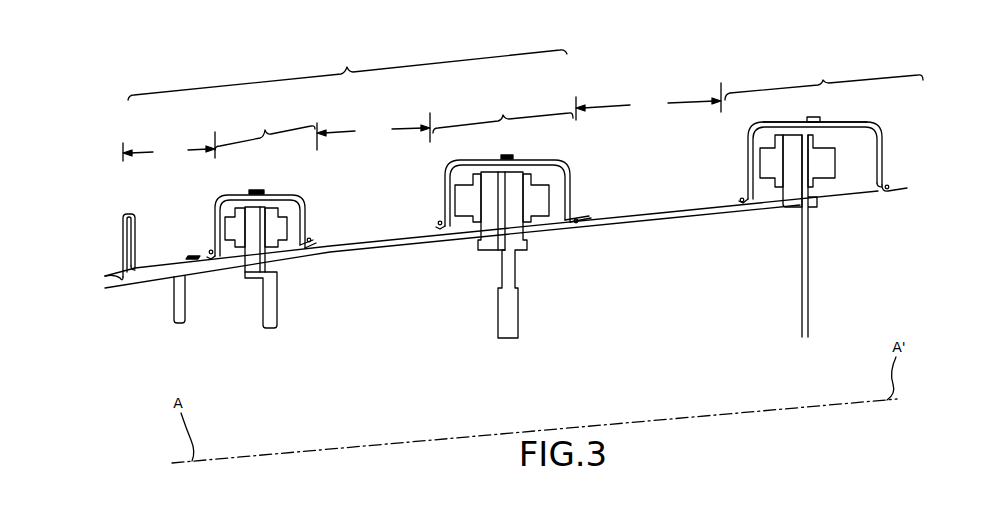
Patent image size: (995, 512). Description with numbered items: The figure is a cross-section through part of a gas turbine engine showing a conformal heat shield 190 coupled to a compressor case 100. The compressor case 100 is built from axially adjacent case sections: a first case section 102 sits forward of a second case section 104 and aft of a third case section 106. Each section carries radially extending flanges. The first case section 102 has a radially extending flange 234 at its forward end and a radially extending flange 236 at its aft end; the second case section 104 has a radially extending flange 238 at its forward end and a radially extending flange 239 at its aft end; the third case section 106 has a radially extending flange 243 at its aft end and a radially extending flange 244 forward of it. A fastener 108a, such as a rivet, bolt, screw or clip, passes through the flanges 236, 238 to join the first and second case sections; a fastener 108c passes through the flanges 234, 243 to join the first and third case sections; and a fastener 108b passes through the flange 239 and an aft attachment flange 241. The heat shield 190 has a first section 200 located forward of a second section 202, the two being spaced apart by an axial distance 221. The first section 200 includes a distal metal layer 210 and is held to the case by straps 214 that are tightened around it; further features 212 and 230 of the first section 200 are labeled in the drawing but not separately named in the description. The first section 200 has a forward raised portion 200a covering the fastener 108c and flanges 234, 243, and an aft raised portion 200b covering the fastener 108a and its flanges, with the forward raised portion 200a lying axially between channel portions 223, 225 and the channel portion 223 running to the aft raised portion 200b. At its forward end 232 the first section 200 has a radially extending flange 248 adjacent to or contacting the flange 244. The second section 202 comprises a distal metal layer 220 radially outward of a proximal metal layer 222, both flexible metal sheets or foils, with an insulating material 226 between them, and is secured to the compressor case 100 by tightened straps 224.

The compressor case 100 is at (120, 336).
The first case section 102 is at (352, 253).
The second case section 104 is at (617, 222).
The third case section 106 is at (180, 290).
The fastener 108a is at (464, 195).
The fastener 108b is at (830, 167).
The fastener 108c is at (230, 222).
The conformal heat shield 190 is at (122, 136).
The first section 200 is at (347, 72).
The forward raised portion 200a is at (265, 132).
The aft raised portion 200b is at (503, 113).
The second section 202 is at (824, 79).
The distal metal layer 210 is at (300, 200).
The sidewall of shield housing 212 is at (300, 226).
The straps 214 is at (257, 190).
The distal metal layer 220 is at (880, 138).
The axial distance 221 is at (648, 101).
The proximal metal layer 222 is at (878, 163).
The channel portion 223 is at (373, 131).
The straps 224 is at (806, 118).
The channel portion 225 is at (169, 146).
The insulating material 226 is at (862, 126).
The housing flange 230 is at (573, 205).
The forward end 232 is at (122, 250).
The radially extending flange 234 is at (265, 243).
The radially extending flange 236 is at (492, 207).
The radially extending flange 238 is at (513, 208).
The radially extending flange 239 is at (794, 186).
The aft attachment flange 241 is at (810, 197).
The radially extending flange 243 is at (256, 228).
The radially extending flange 244 is at (113, 276).
The radially extending flange 248 is at (131, 238).